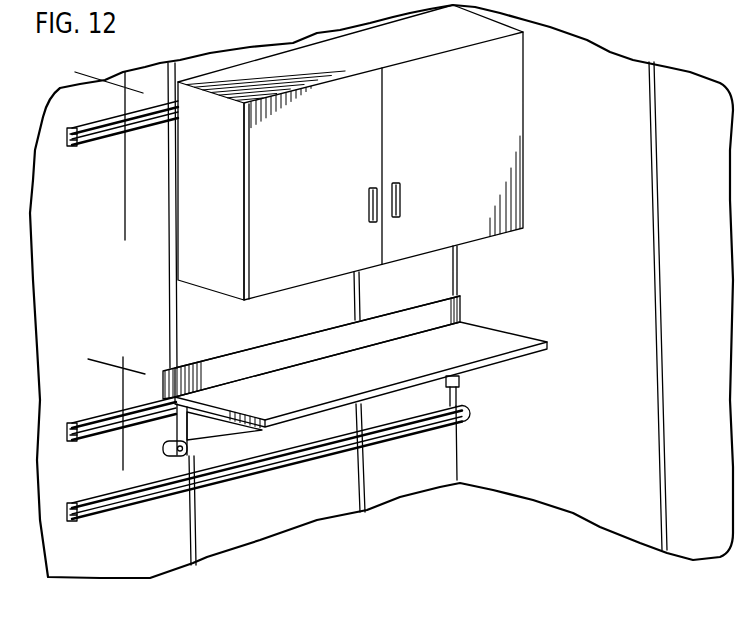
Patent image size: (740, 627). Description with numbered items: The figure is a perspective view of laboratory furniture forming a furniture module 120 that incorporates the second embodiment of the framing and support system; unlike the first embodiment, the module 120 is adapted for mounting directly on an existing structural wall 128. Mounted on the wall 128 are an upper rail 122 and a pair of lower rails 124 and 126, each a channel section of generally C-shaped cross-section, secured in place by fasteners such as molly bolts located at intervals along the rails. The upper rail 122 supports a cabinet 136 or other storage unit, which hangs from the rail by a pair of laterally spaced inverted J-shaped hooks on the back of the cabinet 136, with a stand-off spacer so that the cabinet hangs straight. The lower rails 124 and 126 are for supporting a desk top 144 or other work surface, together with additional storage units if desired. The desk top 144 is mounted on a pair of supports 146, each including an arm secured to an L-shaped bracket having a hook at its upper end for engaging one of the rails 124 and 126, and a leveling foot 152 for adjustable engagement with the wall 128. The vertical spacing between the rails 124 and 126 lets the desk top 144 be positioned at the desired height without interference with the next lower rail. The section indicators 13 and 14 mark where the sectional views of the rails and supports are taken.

The section line 13- 13 is at (80, 82).
The section line 14- 14 is at (105, 370).
The furniture module 120 is at (100, 204).
The upper rail 122 is at (88, 141).
The lower rail 124 is at (80, 420).
The lower rail 126 is at (80, 519).
The wall 128 is at (119, 313).
The cabinet 136 is at (529, 134).
The desk top 144 is at (504, 324).
The support 146 is at (226, 443).
The leveling foot 152 is at (167, 446).